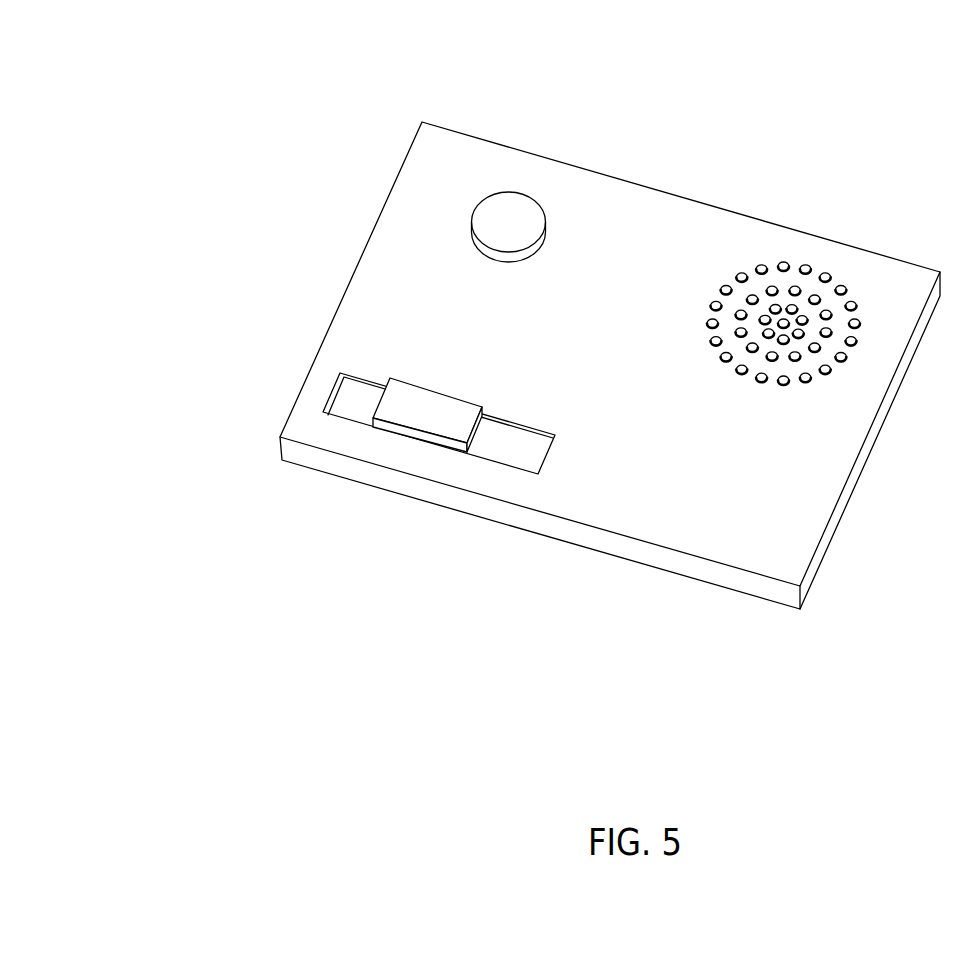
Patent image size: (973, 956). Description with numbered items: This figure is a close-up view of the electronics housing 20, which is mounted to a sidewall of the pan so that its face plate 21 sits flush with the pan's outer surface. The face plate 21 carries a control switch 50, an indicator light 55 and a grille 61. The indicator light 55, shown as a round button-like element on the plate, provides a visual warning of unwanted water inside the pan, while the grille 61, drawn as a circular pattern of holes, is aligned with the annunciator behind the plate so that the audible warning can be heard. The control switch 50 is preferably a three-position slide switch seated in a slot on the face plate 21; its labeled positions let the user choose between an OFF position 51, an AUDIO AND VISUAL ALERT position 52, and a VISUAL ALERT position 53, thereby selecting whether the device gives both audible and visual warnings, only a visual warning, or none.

The electronics housing 20 is at (534, 373).
The face plate 21 is at (646, 270).
The control switch 50 is at (360, 479).
The OFF position 51 is at (357, 357).
The AUDIO AND VISUAL ALERT position 52 is at (447, 397).
The VISUAL ALERT position 53 is at (533, 423).
The indicator light 55 is at (515, 218).
The grille 61 is at (793, 290).